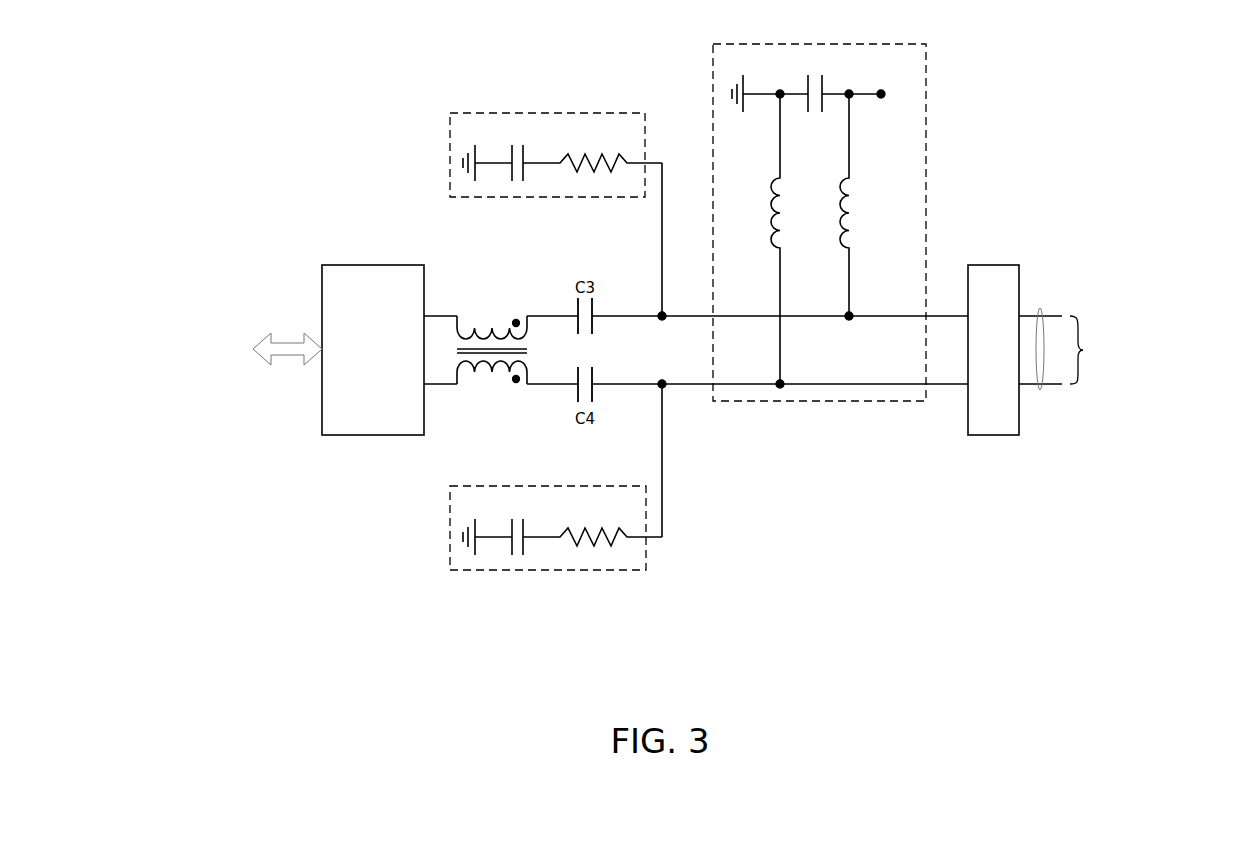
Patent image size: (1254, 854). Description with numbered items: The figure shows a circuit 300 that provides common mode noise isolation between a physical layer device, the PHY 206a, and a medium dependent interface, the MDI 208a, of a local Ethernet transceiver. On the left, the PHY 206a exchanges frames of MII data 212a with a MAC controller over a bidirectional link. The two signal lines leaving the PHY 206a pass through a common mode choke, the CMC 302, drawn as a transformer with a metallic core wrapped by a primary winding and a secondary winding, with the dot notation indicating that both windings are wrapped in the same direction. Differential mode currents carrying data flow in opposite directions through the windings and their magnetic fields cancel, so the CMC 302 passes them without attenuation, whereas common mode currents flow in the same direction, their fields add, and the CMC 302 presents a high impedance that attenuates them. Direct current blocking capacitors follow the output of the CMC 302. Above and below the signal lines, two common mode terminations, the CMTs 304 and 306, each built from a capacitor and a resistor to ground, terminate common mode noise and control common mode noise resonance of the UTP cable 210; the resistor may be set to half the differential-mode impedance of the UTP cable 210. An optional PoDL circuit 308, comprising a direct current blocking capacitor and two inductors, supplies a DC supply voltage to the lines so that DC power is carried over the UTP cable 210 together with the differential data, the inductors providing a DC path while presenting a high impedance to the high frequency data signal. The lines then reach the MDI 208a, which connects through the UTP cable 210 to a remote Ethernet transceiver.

The physical layer device (PHY) 206a is at (366, 265).
The medium dependent interface (MDI) 208a is at (986, 265).
The UTP cable 210 is at (1042, 390).
The MII data 212a is at (290, 370).
The circuit 300 is at (935, 640).
The common mode choke (CMC) 302 is at (489, 312).
The common mode termination (CMT) 304 is at (450, 114).
The common mode termination (CMT) 306 is at (450, 570).
The Power over Data Line (PoDL) circuit 308 is at (926, 68).